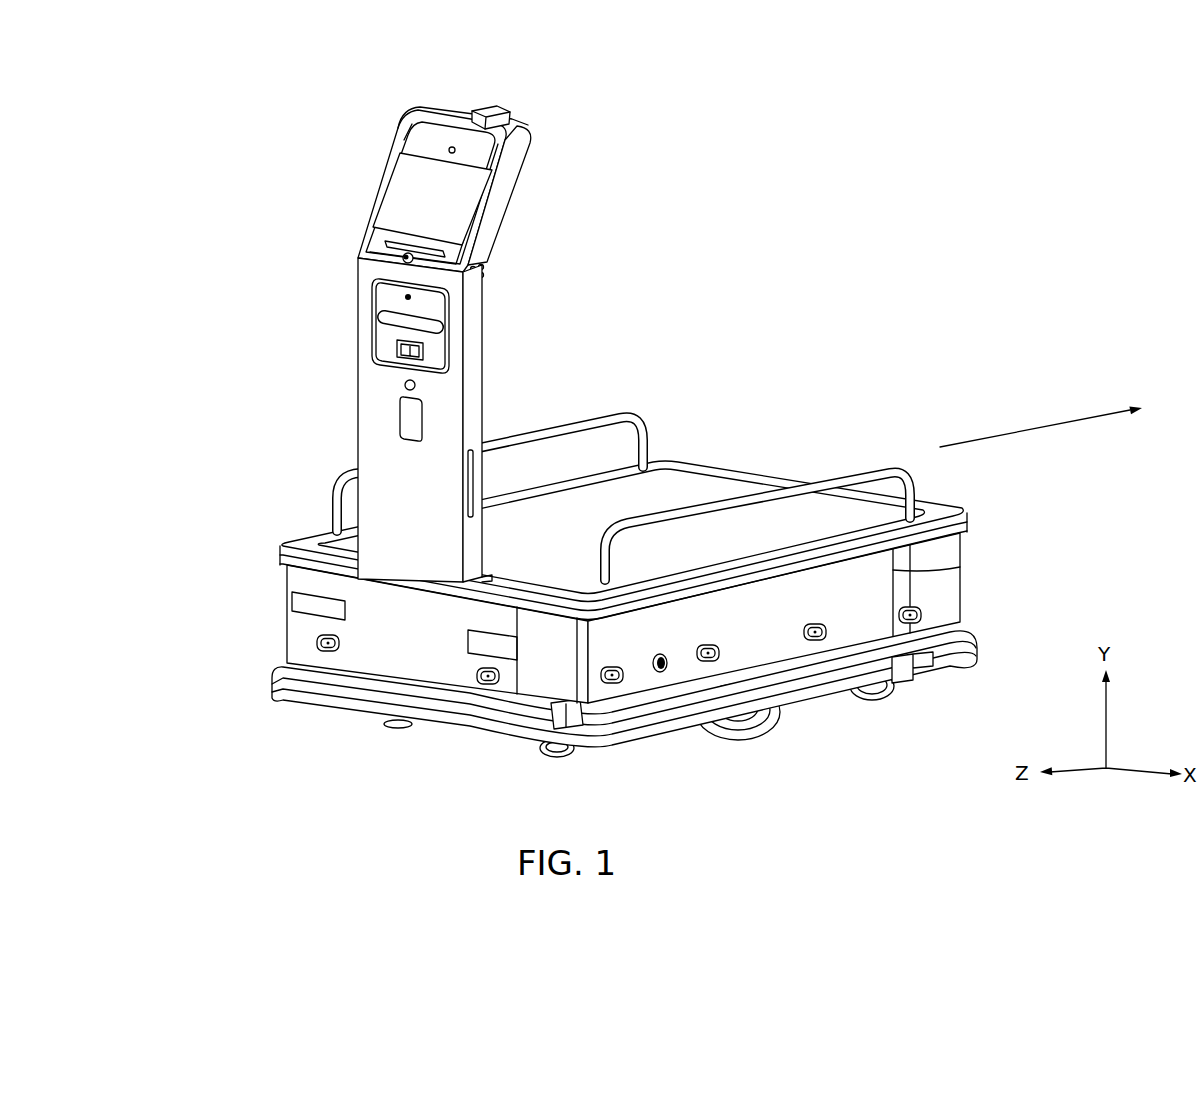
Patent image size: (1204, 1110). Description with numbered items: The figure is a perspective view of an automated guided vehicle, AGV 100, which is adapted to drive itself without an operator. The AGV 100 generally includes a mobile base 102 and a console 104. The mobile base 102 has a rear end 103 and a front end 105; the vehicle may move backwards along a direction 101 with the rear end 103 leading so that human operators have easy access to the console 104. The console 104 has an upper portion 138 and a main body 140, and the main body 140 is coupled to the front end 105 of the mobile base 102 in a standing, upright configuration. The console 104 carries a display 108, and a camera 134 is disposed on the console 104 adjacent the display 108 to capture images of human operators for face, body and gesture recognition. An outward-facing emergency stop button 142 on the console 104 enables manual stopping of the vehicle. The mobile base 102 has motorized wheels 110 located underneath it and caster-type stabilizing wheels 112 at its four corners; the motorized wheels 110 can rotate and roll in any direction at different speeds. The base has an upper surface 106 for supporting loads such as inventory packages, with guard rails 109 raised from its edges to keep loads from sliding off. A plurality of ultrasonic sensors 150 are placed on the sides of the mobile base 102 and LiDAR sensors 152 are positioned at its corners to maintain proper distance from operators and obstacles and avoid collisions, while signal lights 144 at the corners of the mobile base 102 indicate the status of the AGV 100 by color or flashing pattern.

The automated guided vehicle 100 is at (638, 429).
The direction 101 is at (1050, 425).
The mobile base 102 is at (591, 607).
The rear end 103 is at (623, 480).
The console 104 is at (374, 313).
The front end 105 is at (382, 650).
The upper surface 106 is at (697, 485).
The display 108 is at (408, 190).
The guard rail 109 is at (622, 513).
The motorized wheel 110 is at (740, 738).
The stabilizing wheel 112 is at (560, 757).
The camera 134 is at (450, 147).
The upper portion 138 is at (372, 242).
The main body 140 is at (372, 407).
The emergency stop button 142 is at (402, 259).
The signal light 144 is at (313, 605).
The ultrasonic sensor 150 is at (316, 645).
The LiDAR sensor 152 is at (580, 724).